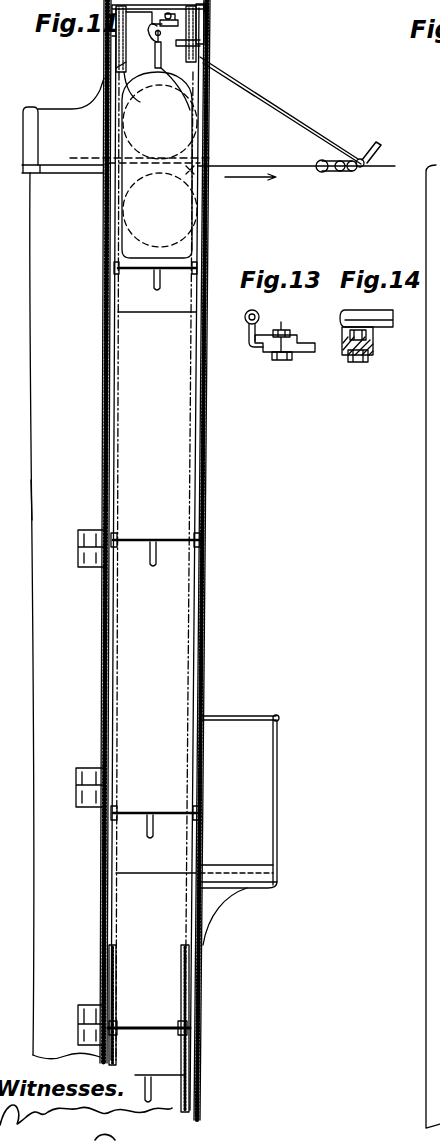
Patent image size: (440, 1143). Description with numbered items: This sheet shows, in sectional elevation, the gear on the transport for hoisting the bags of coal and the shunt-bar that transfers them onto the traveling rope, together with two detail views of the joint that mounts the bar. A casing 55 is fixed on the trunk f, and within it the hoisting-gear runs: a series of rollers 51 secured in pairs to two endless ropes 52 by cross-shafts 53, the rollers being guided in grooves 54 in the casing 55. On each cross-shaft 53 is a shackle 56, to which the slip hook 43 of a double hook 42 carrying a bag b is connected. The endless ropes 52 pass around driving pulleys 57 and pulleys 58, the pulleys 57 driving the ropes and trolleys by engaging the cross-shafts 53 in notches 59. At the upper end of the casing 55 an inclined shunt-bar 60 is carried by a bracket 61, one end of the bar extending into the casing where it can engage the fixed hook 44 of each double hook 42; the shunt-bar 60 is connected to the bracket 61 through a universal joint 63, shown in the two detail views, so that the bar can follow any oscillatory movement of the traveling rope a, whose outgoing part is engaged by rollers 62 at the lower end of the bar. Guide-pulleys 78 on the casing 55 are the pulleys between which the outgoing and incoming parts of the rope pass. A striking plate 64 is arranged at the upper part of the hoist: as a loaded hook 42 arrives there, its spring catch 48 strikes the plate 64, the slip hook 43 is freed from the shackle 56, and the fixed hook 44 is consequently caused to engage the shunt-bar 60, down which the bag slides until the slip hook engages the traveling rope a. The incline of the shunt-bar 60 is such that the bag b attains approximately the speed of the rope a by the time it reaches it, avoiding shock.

In FIG. 11, the double hook 42 is at (130, 39).
In FIG. 11, the slip hook 43 is at (152, 24).
In FIG. 11, the fixed hook 44 is at (163, 50).
In FIG. 11, the spring catch 48 is at (208, 6).
In FIG. 11, the rollers 51 is at (112, 14).
In FIG. 11, the endless ropes 52 is at (116, 414).
In FIG. 11, the cross-shafts 53 is at (118, 33).
In FIG. 11, the grooves 54 is at (110, 634).
In FIG. 11, the casing 55 is at (104, 244).
In FIG. 11, the shackle 56 is at (153, 566).
In FIG. 11, the driving pulleys 57 is at (181, 952).
In FIG. 11, the pulleys 58 is at (173, 82).
In FIG. 11, the notches 59 is at (190, 1080).
In FIG. 11, the shunt-bar 60 is at (291, 112).
In FIG. 14, the shunt-bar 60 is at (394, 323).
In FIG. 11, the bracket 61 is at (204, 44).
In FIG. 13, the bracket 61 is at (326, 356).
In FIG. 11, the rollers 62 is at (338, 175).
In FIG. 13, the universal joint 63 is at (259, 317).
In FIG. 14, the universal joint 63 is at (374, 340).
In FIG. 11, the striking plate 64 is at (210, 30).
In FIG. 11, the guide-pulleys 78 is at (204, 154).
In FIG. 11, the traveling rope a is at (301, 163).
In FIG. 11, the bag b is at (193, 207).
In FIG. 11, the trunk f is at (47, 500).